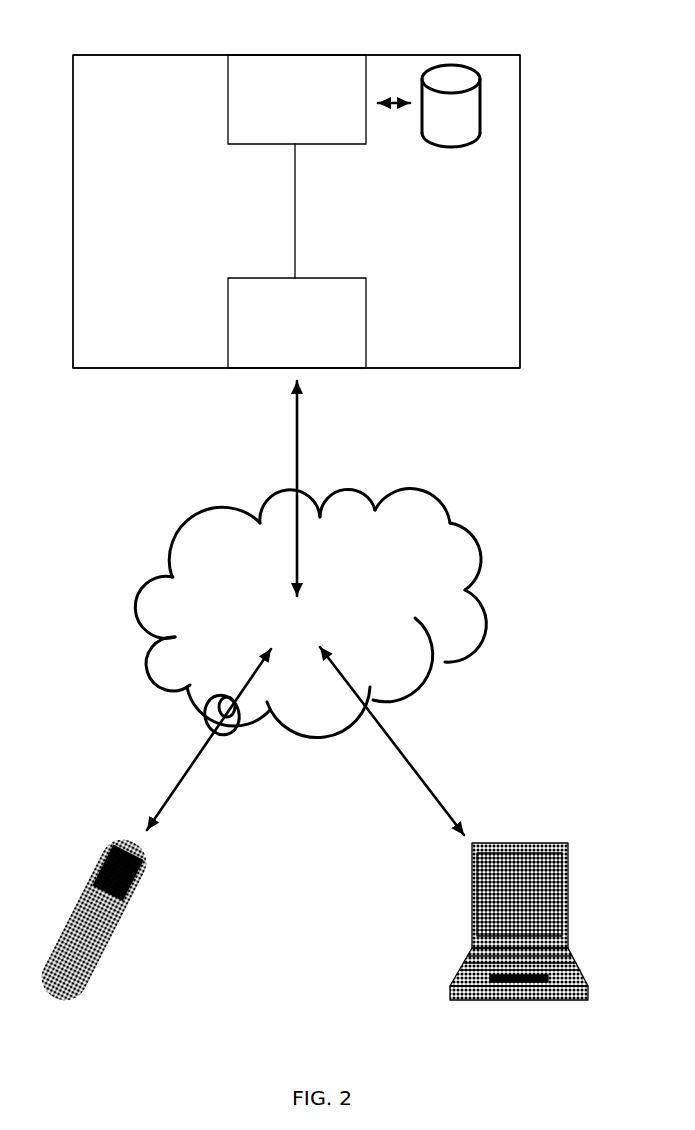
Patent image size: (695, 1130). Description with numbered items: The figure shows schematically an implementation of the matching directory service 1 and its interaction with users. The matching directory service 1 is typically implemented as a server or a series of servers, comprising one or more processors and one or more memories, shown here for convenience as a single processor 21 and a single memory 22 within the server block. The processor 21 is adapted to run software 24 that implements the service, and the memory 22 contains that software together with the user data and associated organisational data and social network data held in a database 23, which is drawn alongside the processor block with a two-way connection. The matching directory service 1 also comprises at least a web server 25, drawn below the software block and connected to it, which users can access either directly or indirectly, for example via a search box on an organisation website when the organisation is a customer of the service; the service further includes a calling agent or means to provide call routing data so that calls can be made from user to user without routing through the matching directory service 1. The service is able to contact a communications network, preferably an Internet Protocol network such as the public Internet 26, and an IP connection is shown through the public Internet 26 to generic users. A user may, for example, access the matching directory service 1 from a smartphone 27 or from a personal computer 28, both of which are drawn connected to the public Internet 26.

The matching directory service 1 is at (123, 414).
The processor 21 is at (75, 110).
The memory 22 is at (521, 108).
The database 23 is at (474, 148).
The software 24 is at (228, 100).
The web server 25 is at (228, 325).
The public Internet 26 is at (453, 547).
The smartphone 27 is at (77, 870).
The personal computer 28 is at (521, 840).